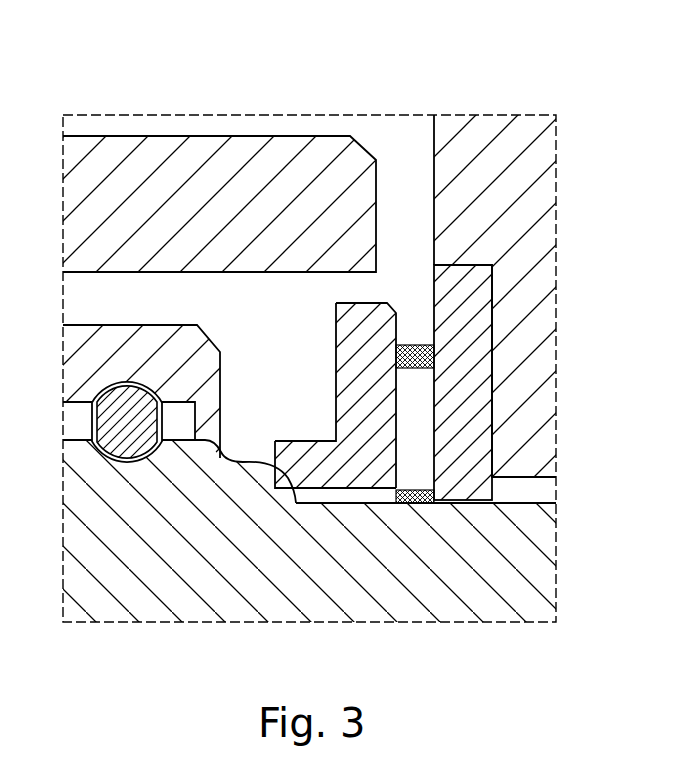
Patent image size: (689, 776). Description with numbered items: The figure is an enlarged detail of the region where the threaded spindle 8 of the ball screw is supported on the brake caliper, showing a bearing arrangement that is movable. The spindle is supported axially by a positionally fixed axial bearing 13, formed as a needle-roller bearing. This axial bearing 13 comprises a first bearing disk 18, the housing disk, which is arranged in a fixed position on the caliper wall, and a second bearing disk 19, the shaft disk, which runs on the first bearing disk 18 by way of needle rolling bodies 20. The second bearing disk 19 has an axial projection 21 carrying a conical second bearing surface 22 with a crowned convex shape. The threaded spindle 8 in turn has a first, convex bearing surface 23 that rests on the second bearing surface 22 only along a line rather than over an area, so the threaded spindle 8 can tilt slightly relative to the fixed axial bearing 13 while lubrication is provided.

The threaded spindle 8 is at (342, 560).
The axial bearing 13 is at (400, 148).
The first bearing disk 18 is at (478, 285).
The second bearing disk 19 is at (325, 359).
The needle rolling bodies 20 is at (417, 411).
The axial projection 21 is at (340, 463).
The second bearing surface 22 is at (290, 476).
The first bearing surface 23 is at (220, 520).